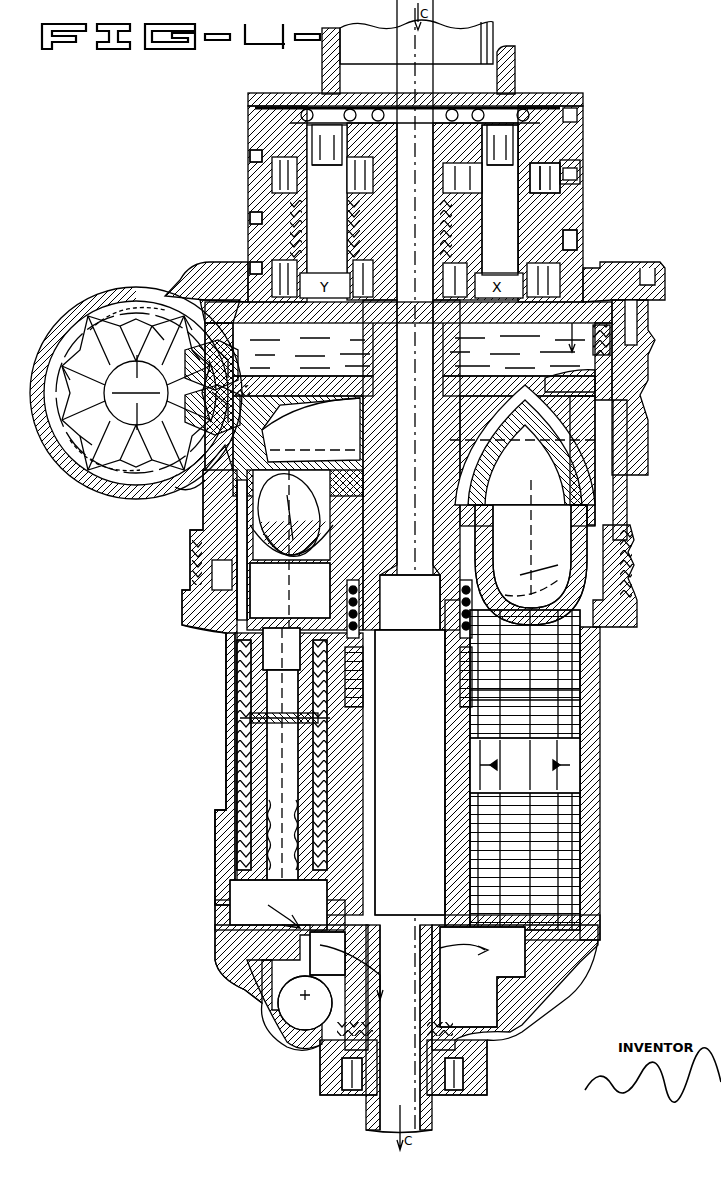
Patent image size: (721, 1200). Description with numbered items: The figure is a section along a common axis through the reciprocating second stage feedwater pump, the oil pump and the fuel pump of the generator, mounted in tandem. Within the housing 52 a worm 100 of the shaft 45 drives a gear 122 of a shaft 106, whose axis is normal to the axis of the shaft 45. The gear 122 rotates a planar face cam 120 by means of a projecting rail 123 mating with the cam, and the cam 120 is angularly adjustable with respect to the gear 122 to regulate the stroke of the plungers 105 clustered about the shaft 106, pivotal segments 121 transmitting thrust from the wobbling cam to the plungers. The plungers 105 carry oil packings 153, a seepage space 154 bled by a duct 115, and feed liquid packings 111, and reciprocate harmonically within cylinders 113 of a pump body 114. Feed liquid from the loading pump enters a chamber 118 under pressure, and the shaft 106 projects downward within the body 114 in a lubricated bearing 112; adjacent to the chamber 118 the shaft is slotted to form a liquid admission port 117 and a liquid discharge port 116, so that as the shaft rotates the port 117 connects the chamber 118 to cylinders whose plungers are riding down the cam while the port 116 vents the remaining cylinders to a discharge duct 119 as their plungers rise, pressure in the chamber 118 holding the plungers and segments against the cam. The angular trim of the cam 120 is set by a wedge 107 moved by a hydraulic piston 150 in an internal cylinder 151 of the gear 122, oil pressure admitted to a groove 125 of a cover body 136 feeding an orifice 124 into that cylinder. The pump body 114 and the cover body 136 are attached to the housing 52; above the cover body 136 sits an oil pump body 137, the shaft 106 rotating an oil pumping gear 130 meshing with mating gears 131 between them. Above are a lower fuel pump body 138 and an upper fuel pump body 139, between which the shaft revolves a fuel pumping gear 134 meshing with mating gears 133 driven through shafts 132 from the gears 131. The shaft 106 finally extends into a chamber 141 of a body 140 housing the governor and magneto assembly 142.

The shaft 45 is at (136, 389).
The housing 52 is at (75, 465).
The worm 100 is at (118, 478).
The plungers 105 is at (490, 548).
The shaft 106 is at (443, 365).
The wedge 107 is at (475, 438).
The feed liquid packings 111 is at (575, 815).
The lubricated bearing 112 is at (368, 805).
The cylinders 113 is at (268, 908).
The pump body 114 is at (217, 832).
The duct 115 is at (162, 745).
The liquid discharge port 116 is at (380, 950).
The liquid admission port 117 is at (478, 942).
The chamber 118 is at (288, 1005).
The discharge duct 119 is at (432, 1112).
The planar face cam 120 is at (600, 502).
The pivotal segments 121 is at (615, 540).
The gear 122 is at (630, 392).
The projecting rail 123 is at (302, 420).
The orifice 124 is at (612, 320).
The groove 125 is at (575, 270).
The oil pumping gear 130 is at (500, 195).
The mating gears 131 is at (568, 250).
The shafts 132 is at (548, 215).
The mating gears 133 is at (545, 187).
The fuel pumping gear 134 is at (562, 165).
The cover body 136 is at (256, 262).
The oil pump body 137 is at (250, 232).
The lower fuel pump body 138 is at (258, 182).
The upper fuel pump body 139 is at (258, 140).
The body 140 is at (284, 97).
The chamber 141 is at (504, 78).
The governor and magneto assembly 142 is at (494, 42).
The hydraulic piston 150 is at (612, 360).
The internal cylinder 151 is at (588, 376).
The oil packings 153 is at (575, 724).
The seepage space 154 is at (575, 756).